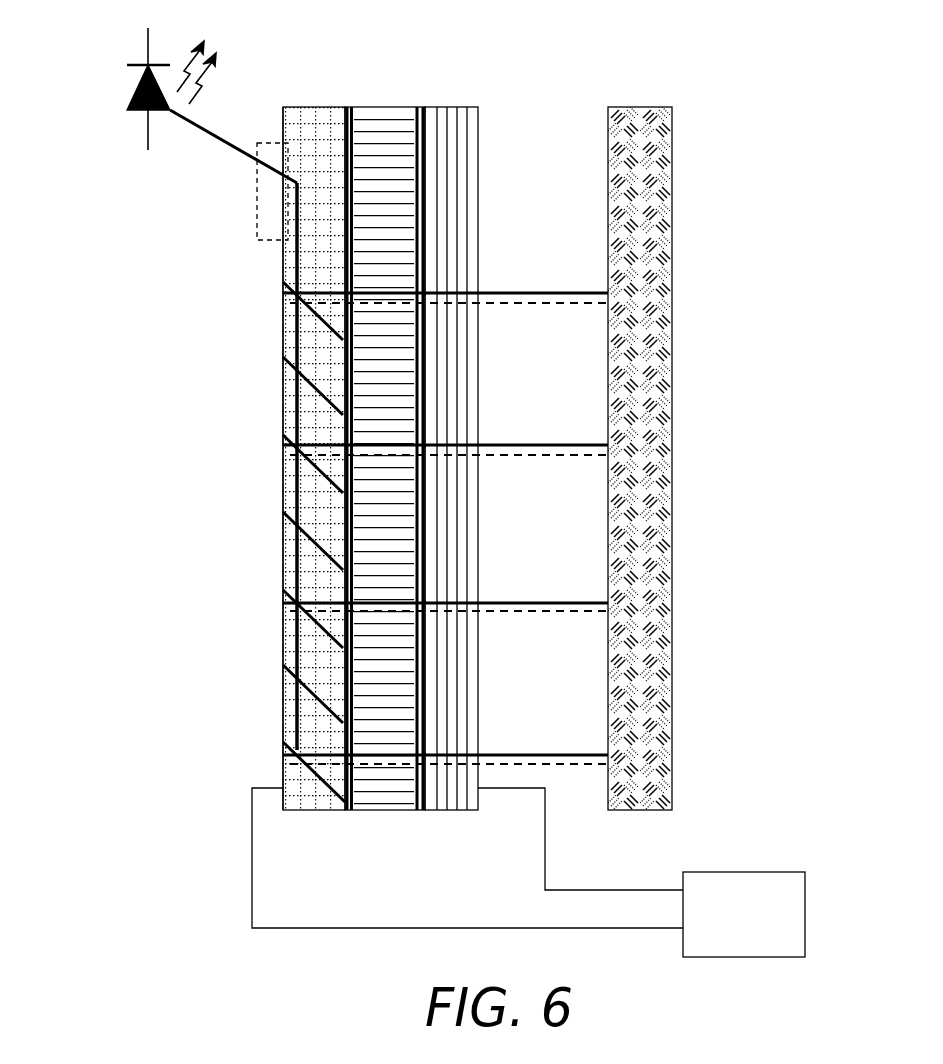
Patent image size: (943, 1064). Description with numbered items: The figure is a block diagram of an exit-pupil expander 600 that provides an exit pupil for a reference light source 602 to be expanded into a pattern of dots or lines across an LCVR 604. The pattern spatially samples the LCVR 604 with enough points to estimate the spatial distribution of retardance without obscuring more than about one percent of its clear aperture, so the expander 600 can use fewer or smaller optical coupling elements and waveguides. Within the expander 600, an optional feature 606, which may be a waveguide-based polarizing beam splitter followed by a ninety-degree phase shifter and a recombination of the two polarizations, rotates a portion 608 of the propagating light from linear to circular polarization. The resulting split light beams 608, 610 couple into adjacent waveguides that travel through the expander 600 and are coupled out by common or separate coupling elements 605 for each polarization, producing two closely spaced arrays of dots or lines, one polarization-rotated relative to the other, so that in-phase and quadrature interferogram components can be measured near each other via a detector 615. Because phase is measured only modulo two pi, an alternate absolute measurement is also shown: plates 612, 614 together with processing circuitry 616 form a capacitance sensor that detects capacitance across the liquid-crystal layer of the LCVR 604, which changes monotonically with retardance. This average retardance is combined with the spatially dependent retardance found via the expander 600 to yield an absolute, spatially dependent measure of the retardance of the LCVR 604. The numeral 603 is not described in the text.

The exit-pupil expander 600 is at (313, 810).
The reference light source 602 is at (130, 75).
The light guide layer 603 is at (290, 107).
The LCVR 604 is at (388, 107).
The coupling elements 605 is at (283, 447).
The optional feature 606 is at (257, 220).
The split light beam 608 is at (555, 305).
The split light beam 610 is at (536, 292).
The plate 612 is at (283, 733).
The plate 614 is at (430, 713).
The detector 615 is at (630, 107).
The processing circuitry 616 is at (742, 872).